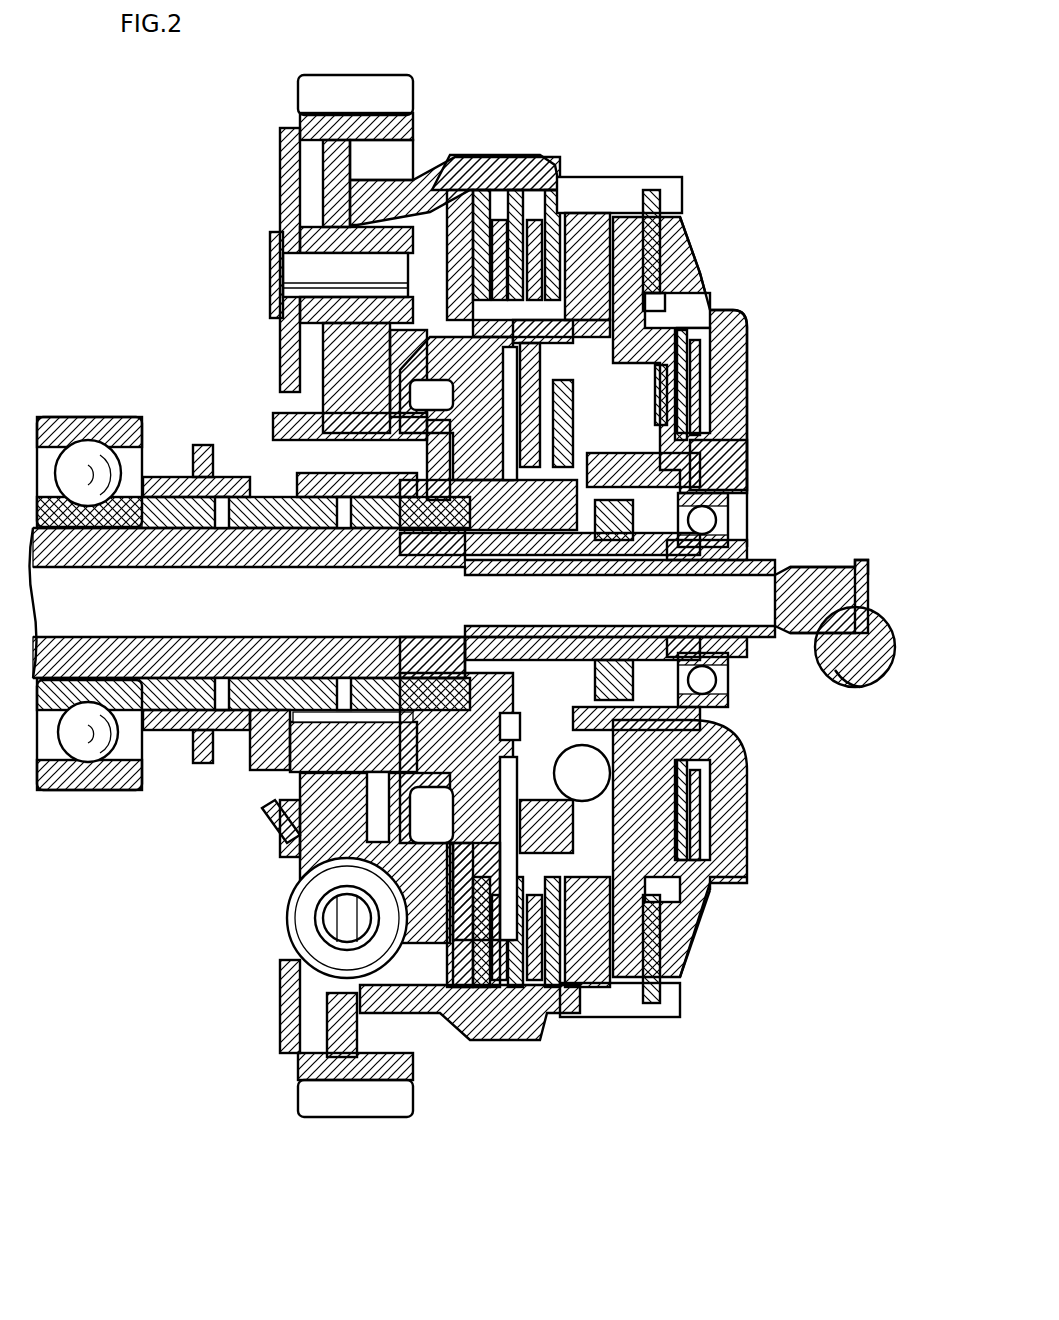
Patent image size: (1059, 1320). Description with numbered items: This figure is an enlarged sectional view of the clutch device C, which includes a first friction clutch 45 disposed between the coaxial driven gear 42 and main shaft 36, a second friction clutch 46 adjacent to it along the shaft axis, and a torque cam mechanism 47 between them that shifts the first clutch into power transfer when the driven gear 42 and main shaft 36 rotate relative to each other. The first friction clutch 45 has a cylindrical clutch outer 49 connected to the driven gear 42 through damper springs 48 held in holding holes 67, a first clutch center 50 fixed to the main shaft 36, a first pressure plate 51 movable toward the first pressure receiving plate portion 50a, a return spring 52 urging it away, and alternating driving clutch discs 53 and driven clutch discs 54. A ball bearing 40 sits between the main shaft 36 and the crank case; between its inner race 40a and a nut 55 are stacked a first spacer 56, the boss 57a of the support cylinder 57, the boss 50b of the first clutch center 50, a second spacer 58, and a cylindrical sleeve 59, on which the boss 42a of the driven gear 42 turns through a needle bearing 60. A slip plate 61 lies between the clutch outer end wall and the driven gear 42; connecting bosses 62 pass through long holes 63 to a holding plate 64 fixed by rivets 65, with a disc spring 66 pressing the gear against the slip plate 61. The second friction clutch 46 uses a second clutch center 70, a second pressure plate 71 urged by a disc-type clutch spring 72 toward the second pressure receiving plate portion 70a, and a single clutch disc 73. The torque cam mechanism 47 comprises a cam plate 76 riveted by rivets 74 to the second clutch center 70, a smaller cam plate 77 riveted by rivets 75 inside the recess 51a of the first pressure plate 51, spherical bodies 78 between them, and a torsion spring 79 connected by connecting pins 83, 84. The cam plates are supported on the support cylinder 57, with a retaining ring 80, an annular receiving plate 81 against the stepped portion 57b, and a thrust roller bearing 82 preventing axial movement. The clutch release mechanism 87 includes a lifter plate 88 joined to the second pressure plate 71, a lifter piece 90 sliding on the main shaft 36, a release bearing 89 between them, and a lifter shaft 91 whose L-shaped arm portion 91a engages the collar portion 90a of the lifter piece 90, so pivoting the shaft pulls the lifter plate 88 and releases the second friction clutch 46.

The main shaft 36 is at (165, 710).
The ball bearing 40 is at (88, 467).
The inner race 40a is at (90, 728).
The driven gear 42 is at (383, 87).
The boss 42a is at (280, 798).
The first friction clutch 45 is at (508, 138).
The second friction clutch 46 is at (703, 220).
The torque cam mechanism 47 is at (630, 720).
The damper springs 48 is at (285, 923).
The clutch outer 49 is at (455, 155).
The first clutch center 50 is at (458, 373).
The first pressure receiving plate portion 50a is at (430, 255).
The boss 50b is at (460, 575).
The first pressure plate 51 is at (595, 177).
The recess 51a is at (667, 300).
The return spring 52 is at (507, 745).
The driving clutch discs 53 is at (552, 190).
The driven clutch discs 54 is at (530, 983).
The nut 55 is at (623, 520).
The first spacer 56 is at (595, 530).
The support cylinder 57 is at (715, 730).
The boss 57a is at (590, 742).
The annular stepped portion 57b is at (700, 780).
The second spacer 58 is at (440, 690).
The cylindrical sleeve 59 is at (250, 700).
The needle bearing 60 is at (330, 528).
The slip plate 61 is at (275, 823).
The connecting bosses 62 is at (300, 220).
The long holes 63 is at (300, 310).
The holding plate 64 is at (280, 162).
The rivets 65 is at (292, 275).
The disc spring 66 is at (280, 395).
The holding holes 67 is at (285, 940).
The second clutch center 70 is at (735, 323).
The second pressure receiving plate portion 70a is at (643, 190).
The second pressure plate 71 is at (690, 260).
The clutch spring 72 is at (700, 380).
The clutch disc 73 is at (675, 1000).
The rivets 74 is at (690, 370).
The rivets 75 is at (520, 470).
The cam plate 76 is at (667, 410).
The cam plate 77 is at (505, 785).
The spherical bodies 78 is at (610, 780).
The torsion spring 79 is at (650, 963).
The retaining ring 80 is at (608, 617).
The annular receiving plate 81 is at (725, 780).
The thrust roller bearing 82 is at (748, 890).
The connecting pin 83 is at (685, 963).
The connecting pin 84 is at (520, 320).
The clutch release mechanism 87 is at (754, 498).
The lifter plate 88 is at (747, 490).
The release bearing 89 is at (716, 532).
The lifter piece 90 is at (753, 637).
The engaging collar portion 90a is at (863, 560).
The lifter shaft 91 is at (858, 635).
The arm portion 91a is at (838, 668).
The clutch device C is at (504, 1052).